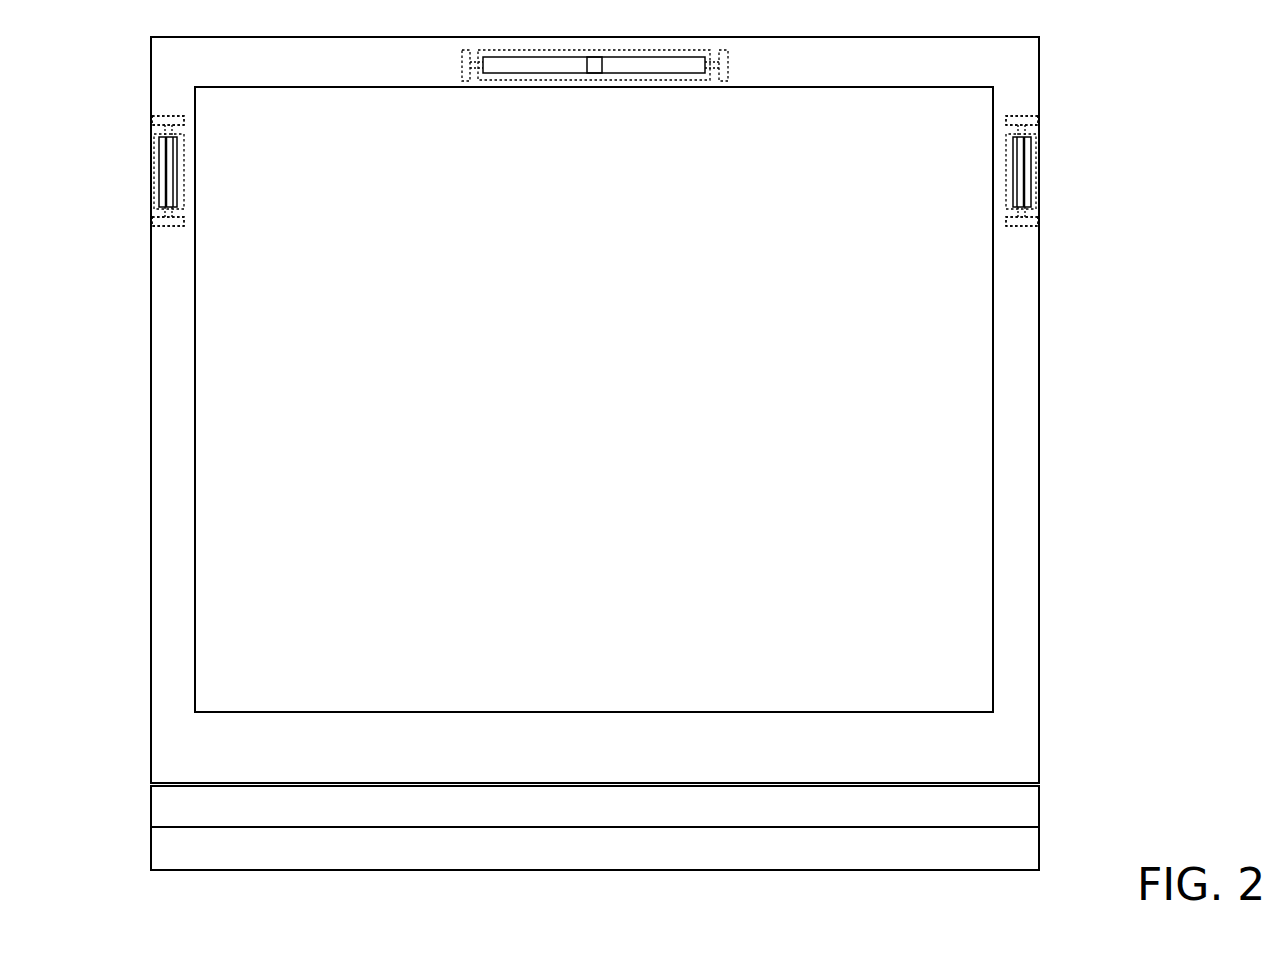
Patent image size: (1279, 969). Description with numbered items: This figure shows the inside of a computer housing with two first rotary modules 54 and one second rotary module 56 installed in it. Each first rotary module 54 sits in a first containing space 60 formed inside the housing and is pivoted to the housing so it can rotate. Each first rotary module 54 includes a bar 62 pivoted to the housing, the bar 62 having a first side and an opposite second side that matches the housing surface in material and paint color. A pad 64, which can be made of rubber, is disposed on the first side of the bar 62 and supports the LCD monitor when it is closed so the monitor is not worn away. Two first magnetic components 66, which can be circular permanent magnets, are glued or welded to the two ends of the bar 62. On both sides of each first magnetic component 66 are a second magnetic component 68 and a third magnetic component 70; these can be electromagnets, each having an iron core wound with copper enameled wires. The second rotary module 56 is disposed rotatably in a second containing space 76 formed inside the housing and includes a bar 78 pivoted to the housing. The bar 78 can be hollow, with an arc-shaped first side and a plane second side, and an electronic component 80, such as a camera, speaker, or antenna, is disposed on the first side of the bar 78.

The first rotary module 54 is at (158, 172).
The second rotary module 56 is at (697, 51).
The first containing space 60 is at (151, 141).
The bar 62 is at (162, 163).
The pad 64 is at (168, 182).
The first magnetic component 66 is at (165, 120).
The second magnetic component 68 is at (178, 118).
The third magnetic component 70 is at (152, 122).
The second containing space 76 is at (668, 51).
The bar 78 is at (637, 62).
The electronic component 80 is at (597, 63).